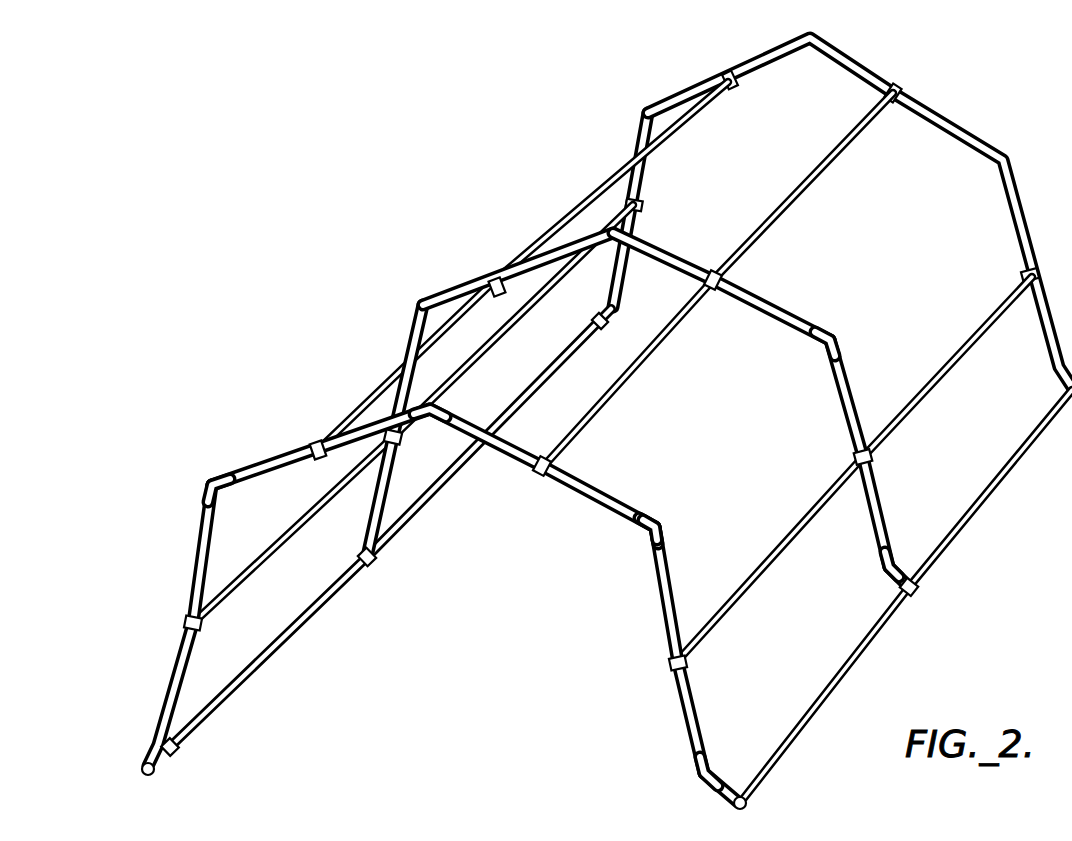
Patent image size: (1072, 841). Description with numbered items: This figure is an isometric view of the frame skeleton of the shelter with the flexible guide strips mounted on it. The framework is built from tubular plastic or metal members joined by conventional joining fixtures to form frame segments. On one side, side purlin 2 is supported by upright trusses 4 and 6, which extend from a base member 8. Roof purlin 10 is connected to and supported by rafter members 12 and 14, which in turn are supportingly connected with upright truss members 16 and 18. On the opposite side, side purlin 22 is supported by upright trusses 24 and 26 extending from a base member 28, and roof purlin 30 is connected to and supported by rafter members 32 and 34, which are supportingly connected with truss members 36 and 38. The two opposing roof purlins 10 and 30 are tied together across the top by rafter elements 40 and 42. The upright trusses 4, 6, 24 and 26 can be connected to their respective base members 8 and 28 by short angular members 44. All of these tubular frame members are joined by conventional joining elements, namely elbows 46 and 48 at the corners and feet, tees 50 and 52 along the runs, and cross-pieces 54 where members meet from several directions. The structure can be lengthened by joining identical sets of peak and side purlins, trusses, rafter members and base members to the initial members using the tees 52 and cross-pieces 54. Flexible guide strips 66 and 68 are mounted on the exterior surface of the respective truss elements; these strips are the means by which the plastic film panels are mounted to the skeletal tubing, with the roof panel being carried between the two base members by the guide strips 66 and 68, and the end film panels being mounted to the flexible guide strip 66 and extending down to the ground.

The side purlin 2 is at (775, 568).
The upright truss 4 is at (685, 721).
The upright truss 6 is at (868, 522).
The base member 8 is at (850, 678).
The roof purlin 10 is at (627, 381).
The rafter member 12 is at (596, 505).
The rafter member 14 is at (780, 325).
The upright truss member 16 is at (660, 600).
The upright truss member 18 is at (840, 408).
The side purlin 22 is at (251, 577).
The upright truss 24 is at (190, 665).
The upright truss 26 is at (398, 472).
The base member 28 is at (293, 640).
The roof purlin 30 is at (383, 378).
The rafter member 32 is at (266, 470).
The rafter member 34 is at (461, 288).
The truss member 36 is at (208, 562).
The truss member 38 is at (424, 366).
The rafter element 40 is at (490, 447).
The rafter element 42 is at (665, 256).
The short angular member 44 is at (366, 555).
The elbow 46 is at (143, 774).
The elbow 48 is at (217, 503).
The tee 50 is at (203, 627).
The tee 52 is at (913, 592).
The cross-piece 54 is at (383, 440).
The flexible guide strip 66 is at (650, 517).
The flexible guide strip 68 is at (810, 318).